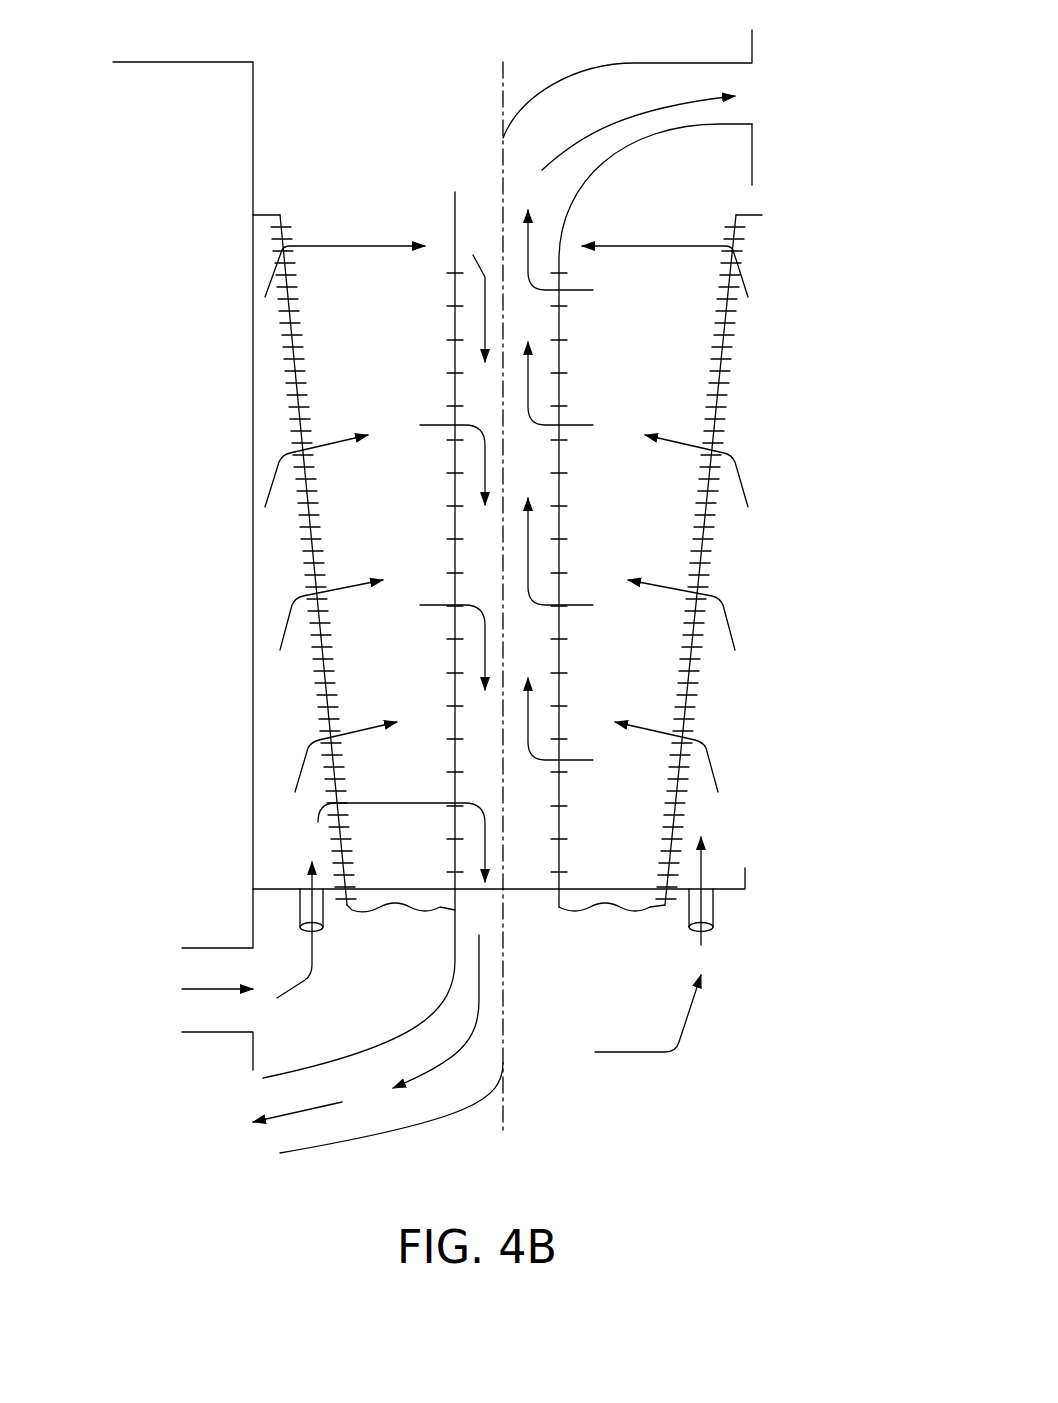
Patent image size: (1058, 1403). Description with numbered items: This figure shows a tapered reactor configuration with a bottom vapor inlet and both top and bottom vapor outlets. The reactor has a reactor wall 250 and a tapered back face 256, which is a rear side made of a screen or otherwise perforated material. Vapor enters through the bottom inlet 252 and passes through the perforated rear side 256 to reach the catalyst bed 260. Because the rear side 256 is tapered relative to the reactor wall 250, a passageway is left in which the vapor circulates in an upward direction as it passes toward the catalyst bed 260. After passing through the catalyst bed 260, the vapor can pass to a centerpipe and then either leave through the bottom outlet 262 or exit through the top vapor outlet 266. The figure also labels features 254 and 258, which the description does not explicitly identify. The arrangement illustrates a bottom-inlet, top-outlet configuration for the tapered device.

The reactor wall 250 is at (253, 412).
The bottom inlet 252 is at (178, 975).
The wall bottom 254 is at (407, 912).
The tapered back face 256 is at (292, 345).
The inner wall 258 is at (455, 327).
The catalyst bed 260 is at (418, 650).
The bottom outlet 262 is at (285, 1135).
The top vapor outlet 266 is at (752, 82).